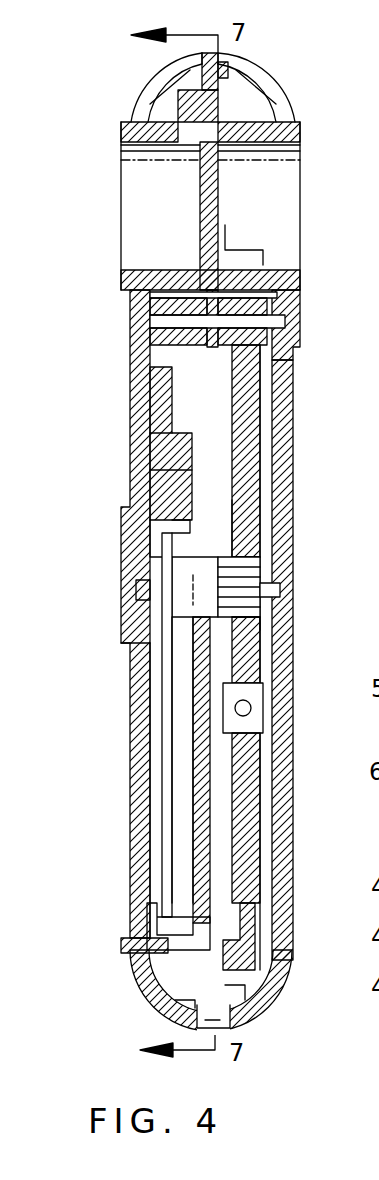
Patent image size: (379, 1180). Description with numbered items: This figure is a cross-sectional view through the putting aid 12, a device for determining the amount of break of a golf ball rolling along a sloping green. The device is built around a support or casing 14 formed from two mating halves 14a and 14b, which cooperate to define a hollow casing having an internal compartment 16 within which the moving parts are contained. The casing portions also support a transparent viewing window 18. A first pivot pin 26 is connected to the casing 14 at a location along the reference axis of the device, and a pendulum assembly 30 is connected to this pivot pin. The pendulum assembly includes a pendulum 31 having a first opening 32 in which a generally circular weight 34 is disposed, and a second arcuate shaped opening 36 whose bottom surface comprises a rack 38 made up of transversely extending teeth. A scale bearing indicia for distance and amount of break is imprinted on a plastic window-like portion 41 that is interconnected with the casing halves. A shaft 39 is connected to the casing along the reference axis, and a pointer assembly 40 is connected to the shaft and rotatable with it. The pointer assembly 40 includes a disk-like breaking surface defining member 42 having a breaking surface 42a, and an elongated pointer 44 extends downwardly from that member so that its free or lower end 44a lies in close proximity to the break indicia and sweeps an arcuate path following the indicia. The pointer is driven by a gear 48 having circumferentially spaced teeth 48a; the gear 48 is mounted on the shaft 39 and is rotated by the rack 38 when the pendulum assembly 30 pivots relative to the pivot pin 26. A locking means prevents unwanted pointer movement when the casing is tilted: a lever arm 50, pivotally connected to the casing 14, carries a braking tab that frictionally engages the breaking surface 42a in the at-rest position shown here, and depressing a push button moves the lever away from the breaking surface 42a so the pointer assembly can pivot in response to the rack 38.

The putting aid device 12 is at (312, 194).
The casing 14 is at (296, 91).
The casing half 14a is at (130, 335).
The casing half 14b is at (302, 287).
The internal compartment 16 is at (190, 393).
The viewing window 18 is at (198, 190).
The first pivot pin 26 is at (285, 322).
The pendulum assembly 30 is at (243, 393).
The pendulum 31 is at (253, 425).
The first opening 32 is at (257, 725).
The weight 34 is at (243, 798).
The second arcuate shaped opening 36 is at (245, 543).
The rack 38 is at (253, 643).
The shaft 39 is at (282, 590).
The pointer assembly 40 is at (143, 620).
The window-like portion 41 is at (130, 755).
The breaking surface defining member 42 is at (163, 560).
The breaking surface 42a is at (172, 523).
The pointer 44 is at (163, 698).
The free end of pointer 44a is at (167, 905).
The gear 48 is at (248, 581).
The gear teeth 48a is at (267, 607).
The lever arm 50 is at (163, 452).